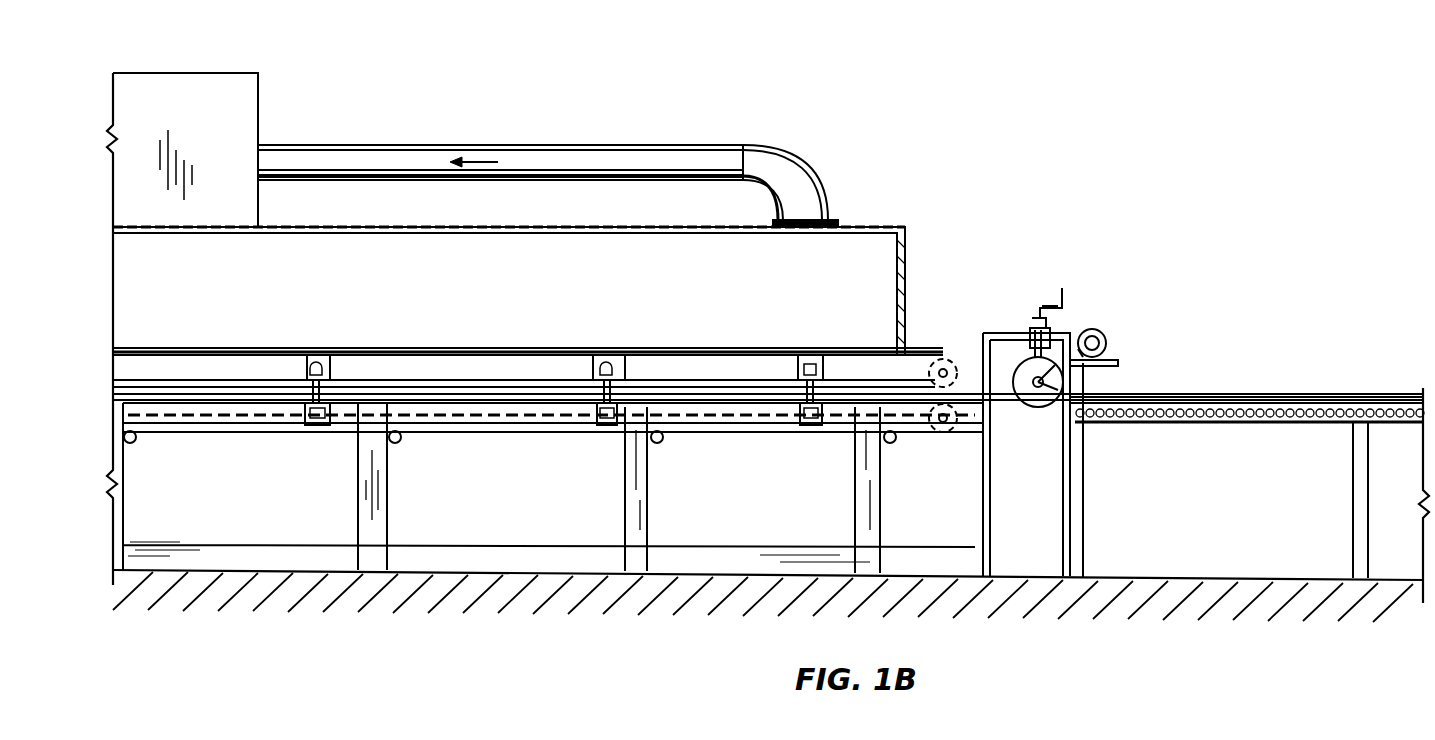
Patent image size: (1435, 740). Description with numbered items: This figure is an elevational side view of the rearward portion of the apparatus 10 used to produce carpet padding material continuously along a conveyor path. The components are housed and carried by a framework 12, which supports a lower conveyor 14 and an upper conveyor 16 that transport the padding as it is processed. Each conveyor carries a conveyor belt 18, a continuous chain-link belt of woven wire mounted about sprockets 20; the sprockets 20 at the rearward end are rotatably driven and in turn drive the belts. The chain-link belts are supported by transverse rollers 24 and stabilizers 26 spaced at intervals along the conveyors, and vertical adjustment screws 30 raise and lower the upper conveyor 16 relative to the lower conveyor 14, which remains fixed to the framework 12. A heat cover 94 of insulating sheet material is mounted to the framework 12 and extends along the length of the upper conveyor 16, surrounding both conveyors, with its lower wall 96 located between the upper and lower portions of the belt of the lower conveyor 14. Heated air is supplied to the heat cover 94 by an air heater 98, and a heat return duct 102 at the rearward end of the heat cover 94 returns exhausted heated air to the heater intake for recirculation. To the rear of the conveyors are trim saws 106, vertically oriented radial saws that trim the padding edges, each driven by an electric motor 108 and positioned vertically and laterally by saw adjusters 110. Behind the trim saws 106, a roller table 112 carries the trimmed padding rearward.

The apparatus 10 is at (855, 143).
The framework 12 is at (640, 505).
The lower conveyor 14 is at (777, 430).
The upper conveyor 16 is at (760, 352).
The conveyor belt 18 is at (530, 348).
The sprockets 20 is at (943, 360).
The transverse rollers 24 is at (395, 443).
The stabilizers 26 is at (613, 360).
The vertical adjustment screws 30 is at (316, 358).
The heat cover 94 is at (885, 232).
The lower wall 96 is at (537, 423).
The air heater 98 is at (247, 107).
The heat return duct 102 is at (715, 157).
The trim saws 106 is at (1030, 343).
The electric motor 108 is at (1100, 328).
The saw adjusters 110 is at (1055, 340).
The roller table 112 is at (1293, 408).